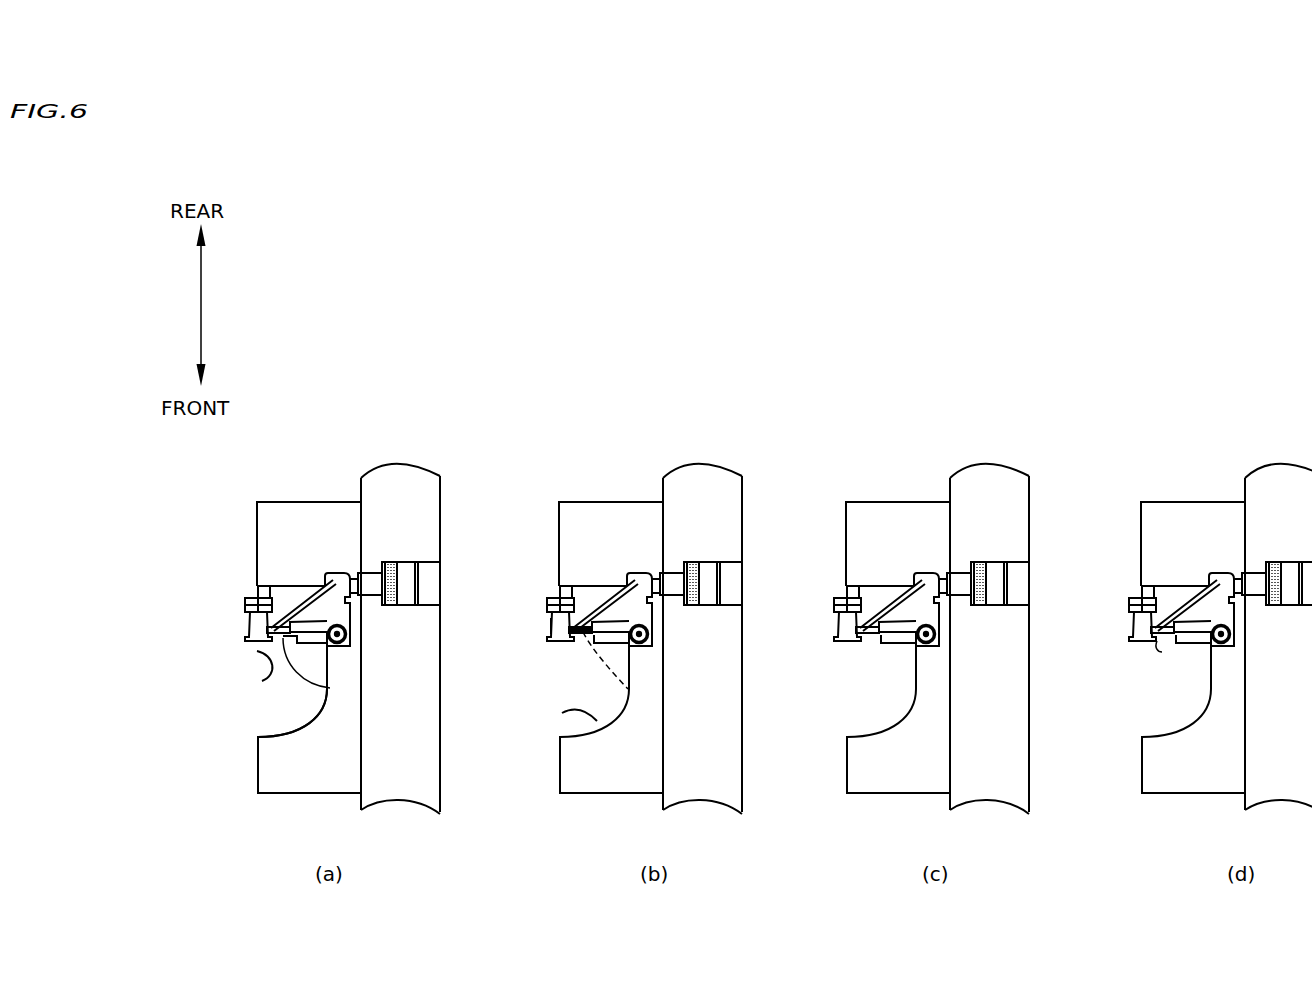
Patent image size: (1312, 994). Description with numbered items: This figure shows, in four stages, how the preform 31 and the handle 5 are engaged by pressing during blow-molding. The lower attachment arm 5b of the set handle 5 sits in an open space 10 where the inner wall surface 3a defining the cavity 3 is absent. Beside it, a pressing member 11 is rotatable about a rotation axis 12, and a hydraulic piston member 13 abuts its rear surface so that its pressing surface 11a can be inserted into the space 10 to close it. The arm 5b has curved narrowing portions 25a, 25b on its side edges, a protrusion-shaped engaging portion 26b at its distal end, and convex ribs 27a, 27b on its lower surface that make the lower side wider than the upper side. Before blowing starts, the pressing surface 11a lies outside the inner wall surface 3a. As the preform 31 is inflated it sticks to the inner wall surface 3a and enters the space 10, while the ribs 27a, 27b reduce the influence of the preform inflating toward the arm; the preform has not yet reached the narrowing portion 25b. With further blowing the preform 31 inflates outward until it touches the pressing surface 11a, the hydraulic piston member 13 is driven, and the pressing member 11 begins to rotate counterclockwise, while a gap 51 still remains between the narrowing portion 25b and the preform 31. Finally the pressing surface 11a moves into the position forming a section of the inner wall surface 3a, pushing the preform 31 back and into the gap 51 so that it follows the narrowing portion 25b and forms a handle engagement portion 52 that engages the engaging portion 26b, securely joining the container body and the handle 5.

The cavity 3 is at (285, 697).
The inner wall surface 3a is at (282, 722).
The handle 5 is at (230, 576).
The lower attachment arm 5b is at (248, 614).
The space 10 is at (330, 688).
The pressing member 11 is at (314, 603).
The pressing surface 11a is at (272, 625).
The rotation axis 12 is at (347, 637).
The hydraulic piston member 13 is at (370, 577).
The narrowing portion 25a is at (523, 648).
The narrowing portion 25b is at (517, 598).
The engaging portion 26b is at (1129, 670).
The rib 27a is at (539, 665).
The rib 27b is at (498, 614).
The preform 31 is at (262, 681).
The gap 51 is at (827, 635).
The handle engagement portion 52 is at (1160, 682).